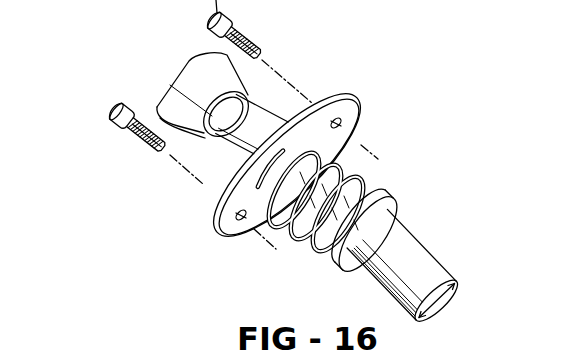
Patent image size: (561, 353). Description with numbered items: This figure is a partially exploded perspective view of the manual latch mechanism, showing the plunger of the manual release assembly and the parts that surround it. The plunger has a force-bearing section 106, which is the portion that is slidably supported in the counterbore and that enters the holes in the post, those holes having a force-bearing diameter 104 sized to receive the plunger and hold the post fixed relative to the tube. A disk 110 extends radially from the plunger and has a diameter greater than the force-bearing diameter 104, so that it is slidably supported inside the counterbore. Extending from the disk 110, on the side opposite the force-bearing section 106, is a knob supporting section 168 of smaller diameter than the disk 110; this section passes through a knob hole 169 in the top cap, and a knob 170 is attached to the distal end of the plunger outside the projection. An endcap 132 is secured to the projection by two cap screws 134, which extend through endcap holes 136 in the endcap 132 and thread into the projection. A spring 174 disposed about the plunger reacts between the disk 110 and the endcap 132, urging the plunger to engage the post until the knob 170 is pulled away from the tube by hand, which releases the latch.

The force-bearing diameter 104 is at (457, 294).
The force-bearing section 106 is at (413, 258).
The disk 110 is at (383, 213).
The endcap 132 is at (230, 206).
The cap screws 134 is at (116, 108).
The endcap holes 136 is at (346, 121).
The knob supporting section 168 is at (254, 130).
The knob hole 169 is at (342, 109).
The knob 170 is at (223, 83).
The spring 174 is at (303, 233).